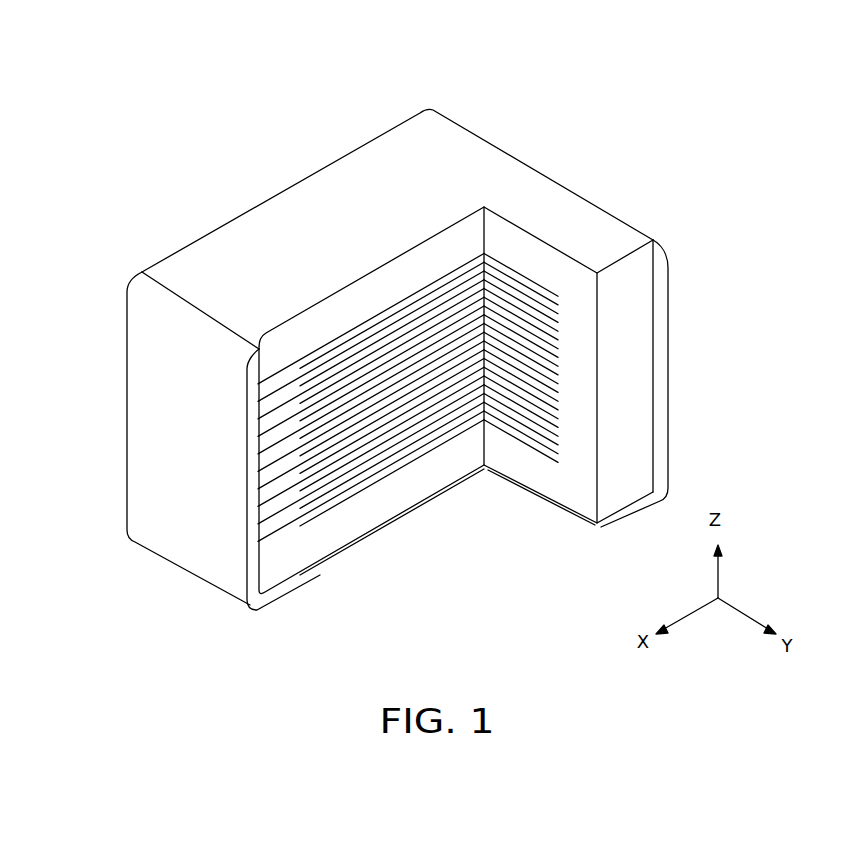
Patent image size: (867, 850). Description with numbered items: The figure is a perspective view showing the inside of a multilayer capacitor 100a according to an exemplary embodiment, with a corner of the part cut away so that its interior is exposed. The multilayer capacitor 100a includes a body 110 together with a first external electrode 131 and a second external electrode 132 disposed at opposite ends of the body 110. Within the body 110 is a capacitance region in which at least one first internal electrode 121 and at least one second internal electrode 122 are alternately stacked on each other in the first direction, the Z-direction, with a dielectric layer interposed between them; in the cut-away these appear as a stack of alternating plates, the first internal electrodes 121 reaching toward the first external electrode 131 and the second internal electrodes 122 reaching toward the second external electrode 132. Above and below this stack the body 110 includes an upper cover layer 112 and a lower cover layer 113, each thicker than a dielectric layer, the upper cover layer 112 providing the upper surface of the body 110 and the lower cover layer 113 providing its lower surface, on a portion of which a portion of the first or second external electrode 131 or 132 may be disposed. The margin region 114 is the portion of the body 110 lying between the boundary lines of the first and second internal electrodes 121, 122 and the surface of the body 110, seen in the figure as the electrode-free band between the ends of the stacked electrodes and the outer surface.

The multilayer capacitor 100a is at (412, 51).
The body 110 is at (445, 146).
The upper cover layer 112 is at (430, 260).
The lower cover layer 113 is at (410, 490).
The margin region 114 is at (567, 483).
The first internal electrode 121 is at (280, 530).
The second internal electrode 122 is at (335, 507).
The first external electrode 131 is at (135, 340).
The second external electrode 132 is at (637, 517).